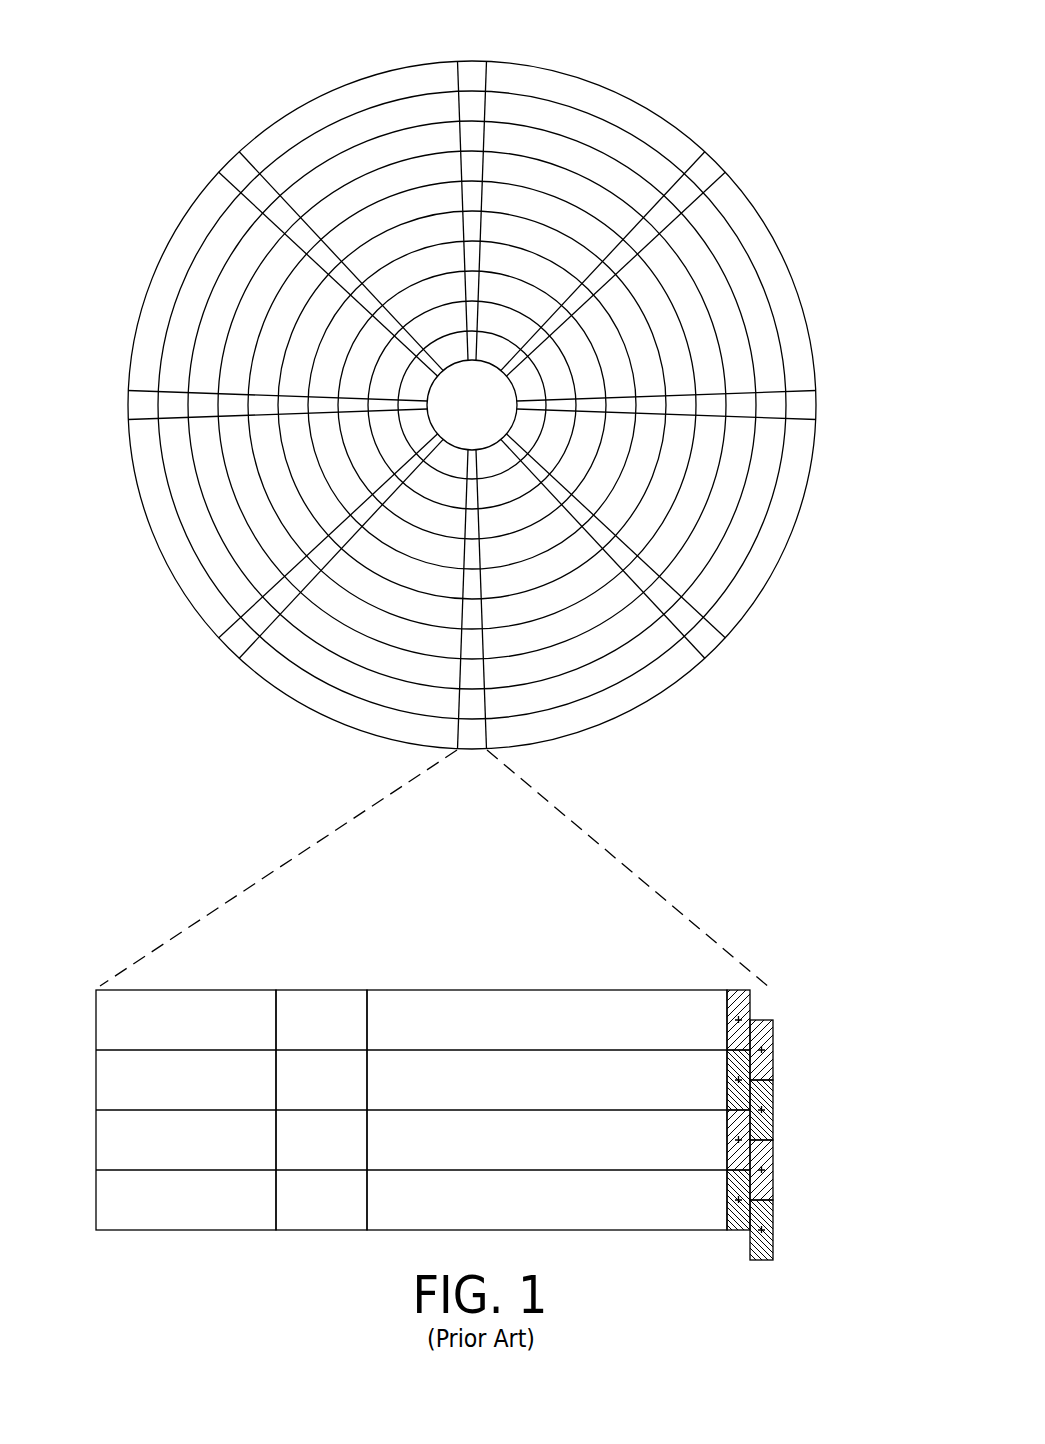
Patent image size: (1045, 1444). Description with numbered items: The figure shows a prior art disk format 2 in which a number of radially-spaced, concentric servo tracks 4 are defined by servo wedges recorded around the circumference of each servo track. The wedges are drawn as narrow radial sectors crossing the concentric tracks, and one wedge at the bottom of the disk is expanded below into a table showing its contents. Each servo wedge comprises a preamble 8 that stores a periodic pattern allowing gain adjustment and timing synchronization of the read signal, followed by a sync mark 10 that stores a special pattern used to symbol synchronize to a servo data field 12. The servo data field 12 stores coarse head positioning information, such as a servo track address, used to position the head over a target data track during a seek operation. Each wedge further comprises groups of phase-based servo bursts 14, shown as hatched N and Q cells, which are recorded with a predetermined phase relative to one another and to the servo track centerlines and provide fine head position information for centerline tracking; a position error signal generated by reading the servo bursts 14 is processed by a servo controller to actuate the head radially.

The disk format 2 is at (218, 66).
The servo tracks 4 is at (612, 110).
The preamble 8 is at (194, 988).
The sync mark 10 is at (322, 988).
The servo data field 12 is at (533, 988).
The servo bursts 14 is at (767, 989).